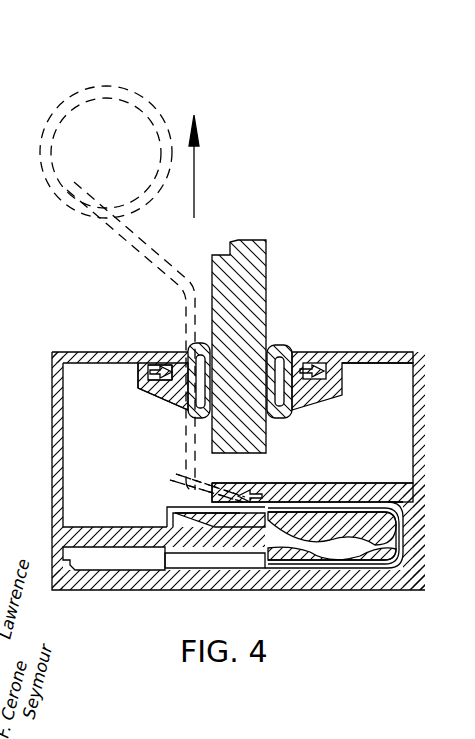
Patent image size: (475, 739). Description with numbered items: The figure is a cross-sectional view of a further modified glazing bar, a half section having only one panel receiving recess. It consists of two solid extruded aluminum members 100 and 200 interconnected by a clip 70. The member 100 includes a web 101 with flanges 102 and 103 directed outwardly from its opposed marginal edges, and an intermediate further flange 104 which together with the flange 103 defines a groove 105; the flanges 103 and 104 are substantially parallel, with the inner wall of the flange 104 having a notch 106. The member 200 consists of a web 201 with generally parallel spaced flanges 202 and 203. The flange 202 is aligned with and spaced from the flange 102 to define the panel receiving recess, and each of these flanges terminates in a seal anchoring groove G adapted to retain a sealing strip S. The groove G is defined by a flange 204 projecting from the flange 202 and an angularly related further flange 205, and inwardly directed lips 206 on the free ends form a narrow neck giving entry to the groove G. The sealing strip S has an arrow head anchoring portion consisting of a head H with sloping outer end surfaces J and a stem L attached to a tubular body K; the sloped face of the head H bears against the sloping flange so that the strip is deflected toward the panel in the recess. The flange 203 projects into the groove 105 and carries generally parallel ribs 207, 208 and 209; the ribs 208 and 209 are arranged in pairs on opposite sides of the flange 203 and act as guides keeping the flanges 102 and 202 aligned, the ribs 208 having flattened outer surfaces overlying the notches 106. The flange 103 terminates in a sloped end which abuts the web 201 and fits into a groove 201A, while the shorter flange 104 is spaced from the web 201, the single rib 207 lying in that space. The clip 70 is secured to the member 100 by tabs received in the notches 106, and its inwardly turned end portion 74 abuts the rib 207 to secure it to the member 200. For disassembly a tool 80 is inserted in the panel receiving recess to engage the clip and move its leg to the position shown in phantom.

The tool 80 is at (46, 132).
The solid extruded aluminum member 100 is at (320, 471).
The web 101 is at (428, 390).
The flange 102 is at (377, 353).
The flange 103 is at (330, 562).
The further flange 104 is at (352, 468).
The groove 105 is at (398, 508).
The notch 106 is at (286, 488).
The clip 70 is at (240, 504).
The inwardly turned end portion 74 is at (167, 518).
The solid extruded aluminum member 200 is at (215, 458).
The web 201 is at (52, 413).
The groove 201A is at (70, 580).
The flange 202 is at (54, 354).
The flange 203 is at (105, 507).
The flange 204 is at (140, 372).
The further flange 205 is at (152, 397).
The lip 206 is at (170, 364).
The rib 207 is at (172, 502).
The rib 208 is at (343, 495).
The rib 209 is at (398, 488).
The tubular body K is at (212, 350).
The sealing strip S is at (200, 345).
The sloping outer end surfaces J is at (142, 366).
The seal anchoring groove G is at (148, 368).
The head H is at (160, 385).
The stem L is at (178, 408).